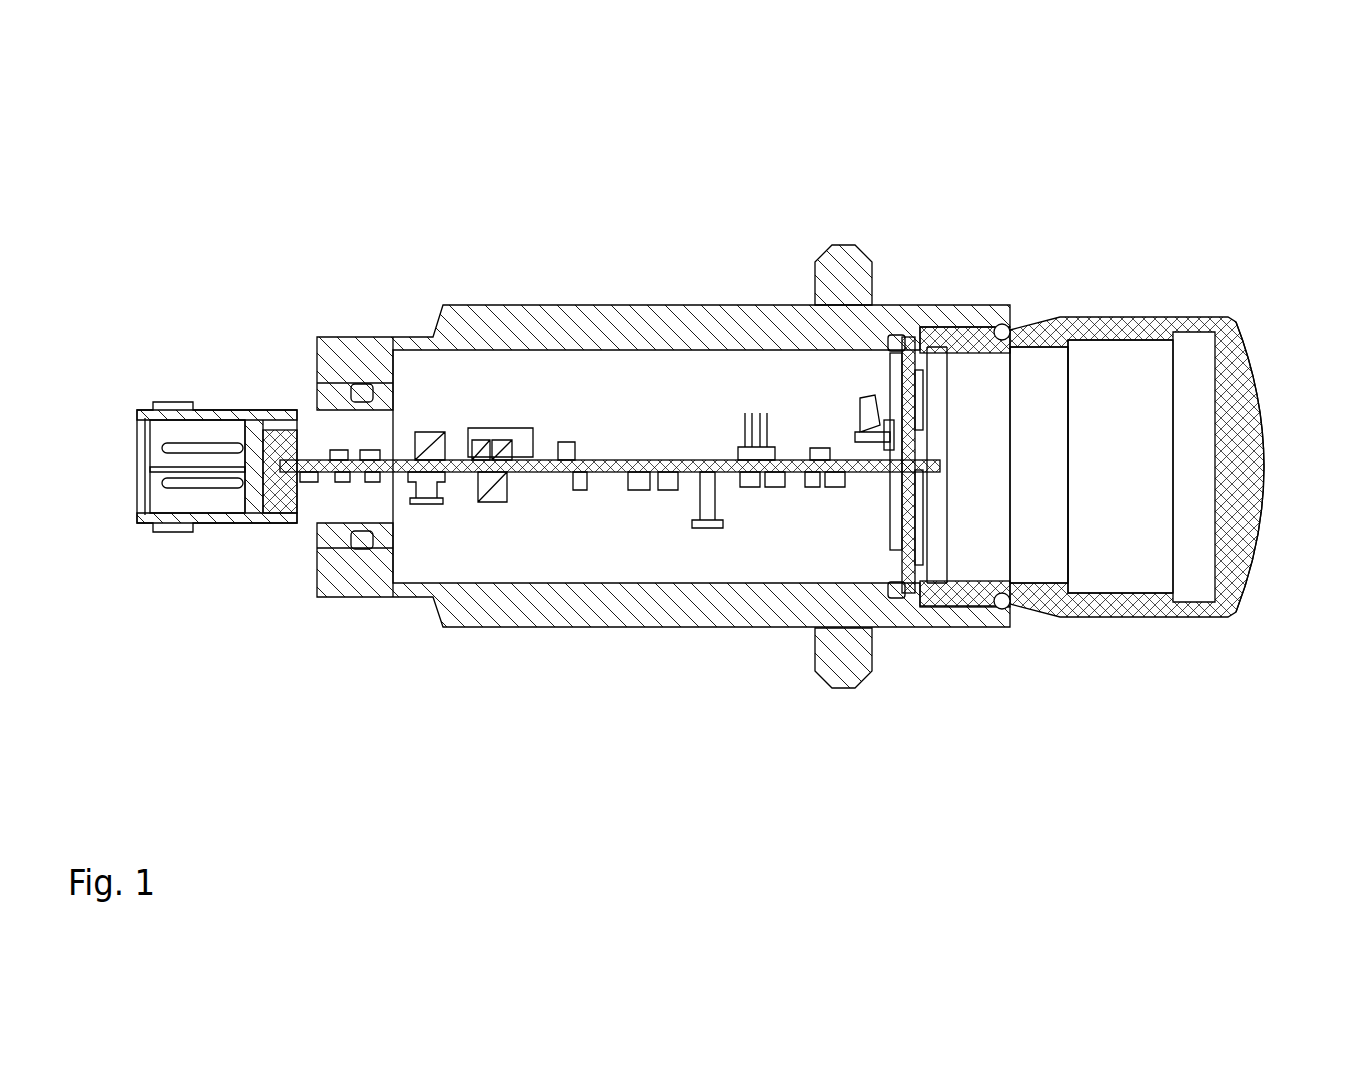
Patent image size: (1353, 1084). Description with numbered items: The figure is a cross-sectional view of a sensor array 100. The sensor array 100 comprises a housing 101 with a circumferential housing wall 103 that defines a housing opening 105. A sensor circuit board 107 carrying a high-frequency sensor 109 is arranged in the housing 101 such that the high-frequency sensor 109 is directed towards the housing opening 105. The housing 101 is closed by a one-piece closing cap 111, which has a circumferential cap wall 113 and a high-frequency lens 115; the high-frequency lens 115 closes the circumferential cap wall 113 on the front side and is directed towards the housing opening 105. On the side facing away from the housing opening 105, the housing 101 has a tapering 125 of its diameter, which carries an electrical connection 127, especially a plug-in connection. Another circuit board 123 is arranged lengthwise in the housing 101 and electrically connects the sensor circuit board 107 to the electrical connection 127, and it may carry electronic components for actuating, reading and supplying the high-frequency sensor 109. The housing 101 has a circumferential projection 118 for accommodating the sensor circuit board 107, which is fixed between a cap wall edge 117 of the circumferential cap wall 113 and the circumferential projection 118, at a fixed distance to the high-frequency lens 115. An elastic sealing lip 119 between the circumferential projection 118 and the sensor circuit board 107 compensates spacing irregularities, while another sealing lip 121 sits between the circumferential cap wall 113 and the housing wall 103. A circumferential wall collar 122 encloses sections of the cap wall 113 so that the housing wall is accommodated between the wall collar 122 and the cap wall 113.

The sensor array 100 is at (423, 142).
The housing 101 is at (674, 286).
The circumferential housing wall 103 is at (518, 300).
The housing opening 105 is at (1016, 487).
The sensor circuit board 107 is at (893, 500).
The high-frequency sensor 109 is at (1100, 318).
The one-piece closing cap 111 is at (1177, 266).
The circumferential cap wall 113 is at (1140, 618).
The high-frequency lens 115 is at (1240, 510).
The cap wall edge 117 is at (920, 333).
The circumferential projection 118 is at (900, 337).
The elastic sealing lip 119 is at (893, 333).
The other sealing lip 121 is at (997, 322).
The circumferential wall collar 122 is at (1012, 330).
The other circuit board 123 is at (600, 478).
The tapering 125 is at (232, 360).
The electrical connection 127 is at (187, 492).